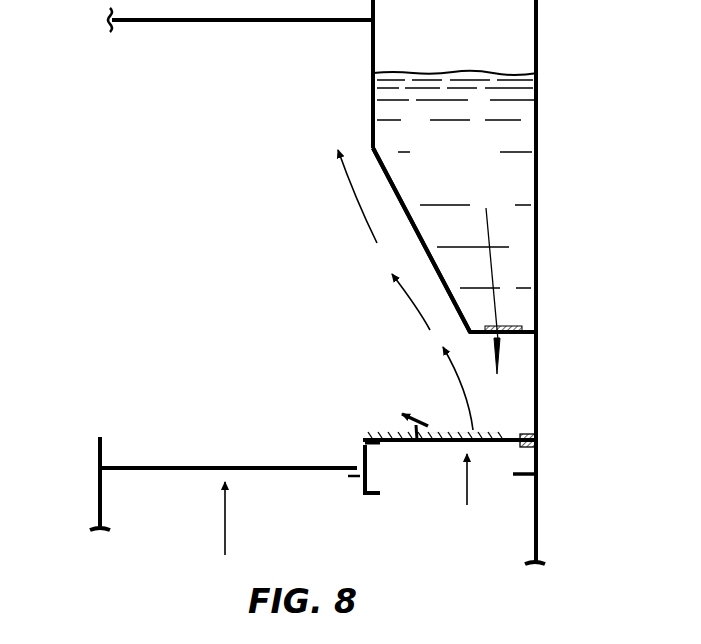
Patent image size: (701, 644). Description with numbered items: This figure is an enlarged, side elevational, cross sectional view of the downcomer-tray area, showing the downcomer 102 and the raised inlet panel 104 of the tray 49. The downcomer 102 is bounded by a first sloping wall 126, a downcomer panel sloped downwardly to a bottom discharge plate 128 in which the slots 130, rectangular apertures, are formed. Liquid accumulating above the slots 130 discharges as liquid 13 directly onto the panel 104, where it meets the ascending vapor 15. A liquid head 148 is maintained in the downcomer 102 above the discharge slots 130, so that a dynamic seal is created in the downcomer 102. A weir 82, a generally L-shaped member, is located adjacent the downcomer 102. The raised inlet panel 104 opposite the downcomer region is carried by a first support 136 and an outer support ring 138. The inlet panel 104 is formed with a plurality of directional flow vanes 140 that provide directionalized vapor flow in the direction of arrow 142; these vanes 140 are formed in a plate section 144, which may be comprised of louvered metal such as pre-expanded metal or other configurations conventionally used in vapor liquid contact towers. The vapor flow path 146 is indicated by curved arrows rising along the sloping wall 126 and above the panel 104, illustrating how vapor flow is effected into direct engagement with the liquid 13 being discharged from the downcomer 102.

The liquid head 148 is at (510, 72).
The first sloping wall 126 is at (386, 161).
The downcomer 102 is at (406, 198).
The bottom discharge plate 128 is at (525, 324).
The slots 130 is at (487, 324).
The liquid 13 is at (509, 338).
The vapor flow path 146 is at (359, 219).
The directional flow vanes 140 is at (440, 435).
The arrow 142 is at (412, 442).
The raised inlet panel 104 is at (440, 447).
The plate section 144 is at (500, 449).
The outer support ring 138 is at (521, 479).
The weir 82 is at (96, 445).
The tray 49 is at (180, 471).
The first support 136 is at (361, 489).
The ascending vapor 15 is at (222, 528).